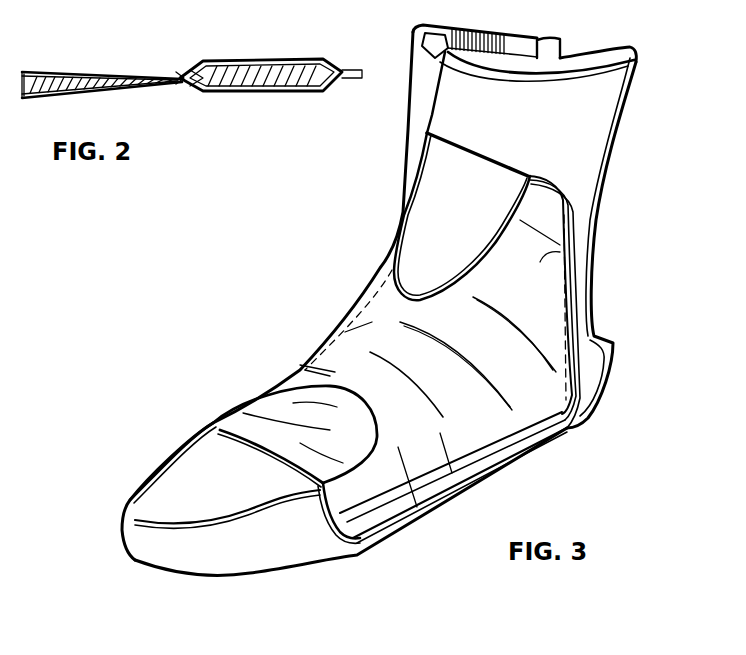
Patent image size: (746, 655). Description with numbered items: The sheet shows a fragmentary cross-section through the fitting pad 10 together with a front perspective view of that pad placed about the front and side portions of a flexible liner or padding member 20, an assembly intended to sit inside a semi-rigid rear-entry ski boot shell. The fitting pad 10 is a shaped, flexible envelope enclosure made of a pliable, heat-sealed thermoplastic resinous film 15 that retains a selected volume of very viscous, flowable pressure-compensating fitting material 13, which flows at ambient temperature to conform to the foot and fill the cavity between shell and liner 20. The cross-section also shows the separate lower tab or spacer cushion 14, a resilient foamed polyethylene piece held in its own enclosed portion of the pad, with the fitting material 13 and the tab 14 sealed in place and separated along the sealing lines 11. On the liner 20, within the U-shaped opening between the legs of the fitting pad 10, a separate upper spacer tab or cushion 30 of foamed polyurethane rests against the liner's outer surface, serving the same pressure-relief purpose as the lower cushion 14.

In FIG. 3, the fitting pad 10 is at (466, 400).
In FIG. 2, the sealing lines 11 is at (183, 77).
In FIG. 2, the pressure-compensating fitting material 13 is at (70, 73).
In FIG. 2, the lower tab or spacer cushion 14 is at (258, 94).
In FIG. 2, the thermoplastic resinous film 15 is at (33, 72).
In FIG. 3, the flexible liner or padding member 20 is at (590, 115).
In FIG. 3, the upper spacer tab or cushion 30 is at (432, 197).